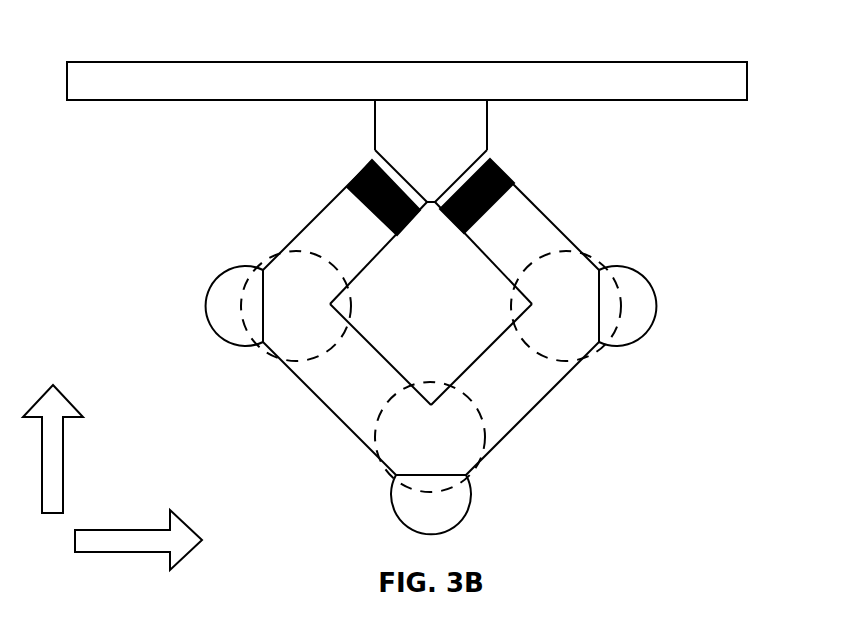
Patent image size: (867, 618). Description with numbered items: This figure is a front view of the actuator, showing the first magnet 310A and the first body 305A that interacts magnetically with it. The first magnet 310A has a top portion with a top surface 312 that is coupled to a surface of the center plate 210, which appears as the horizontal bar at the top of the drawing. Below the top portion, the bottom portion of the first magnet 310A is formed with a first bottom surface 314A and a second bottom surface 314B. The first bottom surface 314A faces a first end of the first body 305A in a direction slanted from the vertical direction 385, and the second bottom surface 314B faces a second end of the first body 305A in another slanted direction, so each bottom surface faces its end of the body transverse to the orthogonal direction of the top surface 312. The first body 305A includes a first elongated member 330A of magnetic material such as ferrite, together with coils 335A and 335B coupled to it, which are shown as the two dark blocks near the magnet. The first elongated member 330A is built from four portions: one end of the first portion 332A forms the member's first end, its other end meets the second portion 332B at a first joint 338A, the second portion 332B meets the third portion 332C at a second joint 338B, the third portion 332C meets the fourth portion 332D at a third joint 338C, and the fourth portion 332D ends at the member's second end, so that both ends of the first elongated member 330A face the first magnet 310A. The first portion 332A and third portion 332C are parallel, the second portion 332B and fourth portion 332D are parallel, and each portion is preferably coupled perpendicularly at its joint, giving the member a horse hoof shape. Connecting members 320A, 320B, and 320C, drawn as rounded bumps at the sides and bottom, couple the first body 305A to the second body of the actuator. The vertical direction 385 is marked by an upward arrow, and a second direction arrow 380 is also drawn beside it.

The center plate 210 is at (722, 93).
The top surface 312 is at (425, 98).
The first magnet 310A is at (432, 151).
The first bottom surface 314A is at (456, 173).
The second bottom surface 314B is at (395, 163).
The first body 305A is at (424, 346).
The first portion 332A is at (557, 223).
The second portion 332B is at (538, 402).
The third portion 332C is at (301, 393).
The fourth portion 332D is at (296, 236).
The coil 335A is at (451, 229).
The coil 335B is at (408, 238).
The connecting member 320A is at (658, 289).
The connecting member 320B is at (466, 518).
The connecting member 320C is at (212, 279).
The first joint 338A is at (601, 362).
The second joint 338B is at (486, 433).
The third joint 338C is at (256, 357).
The first elongated member 330A is at (430, 437).
The vertical direction 385 is at (62, 449).
The horizontal direction arrow 380 is at (138, 553).